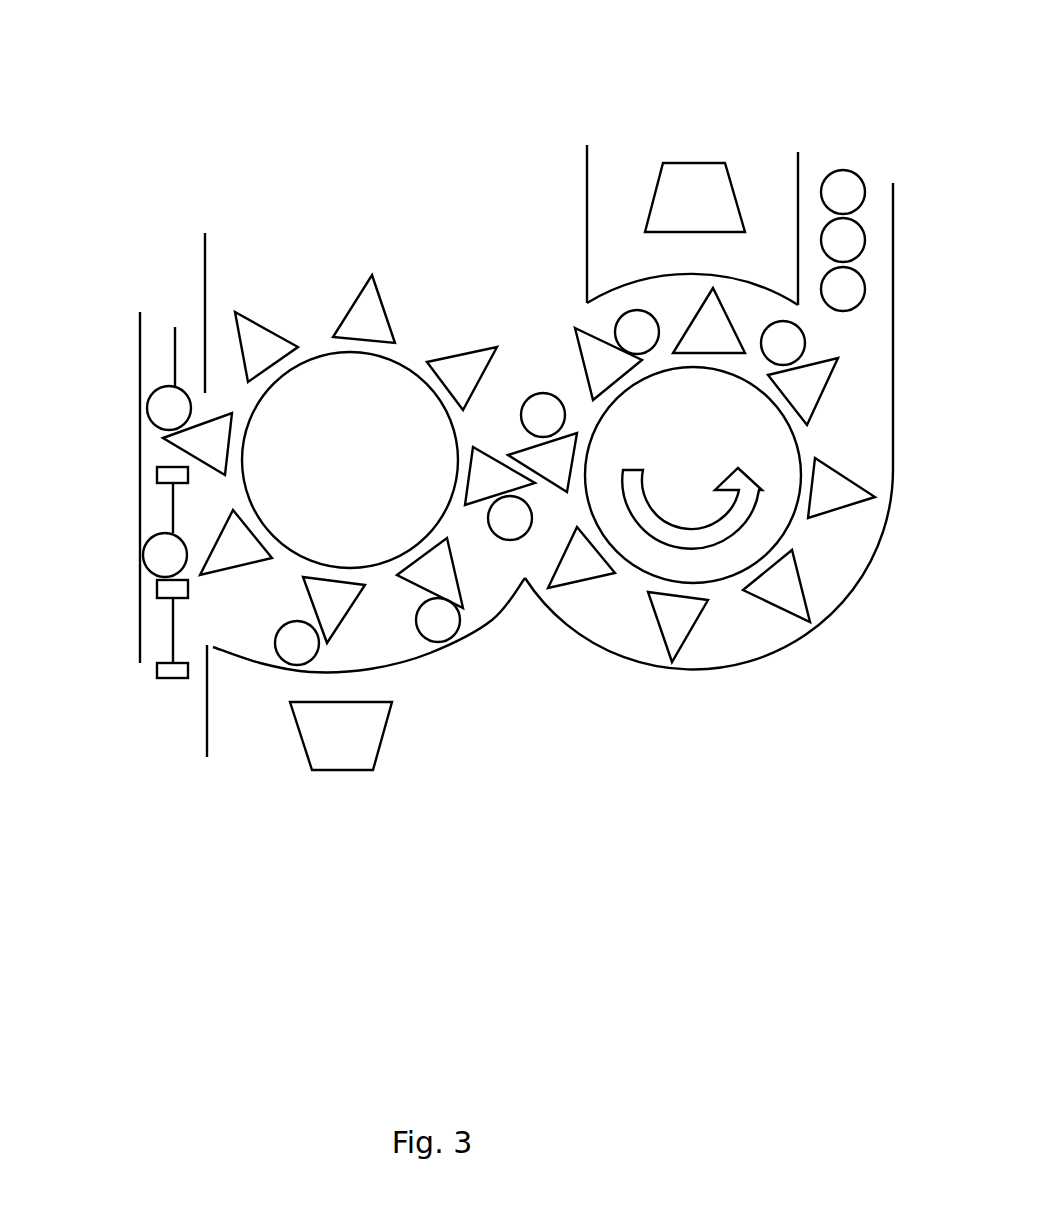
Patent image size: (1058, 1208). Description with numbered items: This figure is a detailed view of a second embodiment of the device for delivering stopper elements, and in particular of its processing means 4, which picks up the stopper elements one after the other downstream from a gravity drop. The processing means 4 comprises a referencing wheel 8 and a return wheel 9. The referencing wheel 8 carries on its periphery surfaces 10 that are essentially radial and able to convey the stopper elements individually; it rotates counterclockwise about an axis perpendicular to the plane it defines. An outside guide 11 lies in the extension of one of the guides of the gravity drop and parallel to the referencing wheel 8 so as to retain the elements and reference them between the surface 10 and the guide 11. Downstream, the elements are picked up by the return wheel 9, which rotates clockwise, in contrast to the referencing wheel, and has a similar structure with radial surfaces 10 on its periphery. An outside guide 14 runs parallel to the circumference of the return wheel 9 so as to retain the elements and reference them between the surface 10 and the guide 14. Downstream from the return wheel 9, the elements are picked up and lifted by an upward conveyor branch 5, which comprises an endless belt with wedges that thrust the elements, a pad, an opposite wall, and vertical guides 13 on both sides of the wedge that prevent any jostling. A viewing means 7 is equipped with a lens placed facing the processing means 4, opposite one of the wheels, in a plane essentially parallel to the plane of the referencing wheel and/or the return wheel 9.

The processing means 4 is at (647, 678).
The upward conveyor branch 5 is at (162, 343).
The viewing means 7 is at (690, 187).
The referencing wheel 8 is at (755, 512).
The return wheel 9 is at (318, 443).
The surfaces 10 is at (823, 365).
The outside guide 11 is at (678, 275).
The vertical guides 13 is at (213, 240).
The outside guide 14 is at (492, 625).